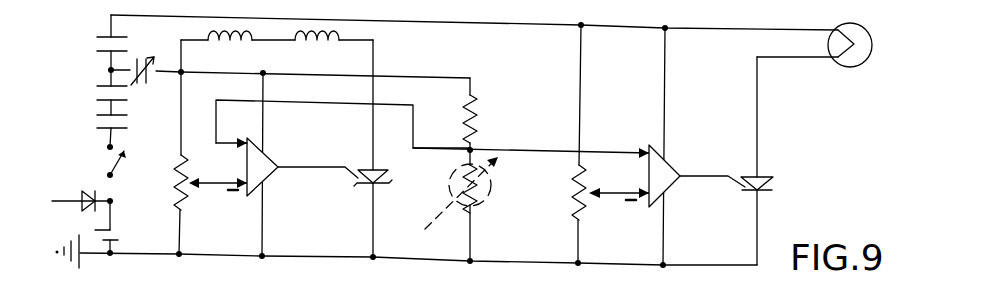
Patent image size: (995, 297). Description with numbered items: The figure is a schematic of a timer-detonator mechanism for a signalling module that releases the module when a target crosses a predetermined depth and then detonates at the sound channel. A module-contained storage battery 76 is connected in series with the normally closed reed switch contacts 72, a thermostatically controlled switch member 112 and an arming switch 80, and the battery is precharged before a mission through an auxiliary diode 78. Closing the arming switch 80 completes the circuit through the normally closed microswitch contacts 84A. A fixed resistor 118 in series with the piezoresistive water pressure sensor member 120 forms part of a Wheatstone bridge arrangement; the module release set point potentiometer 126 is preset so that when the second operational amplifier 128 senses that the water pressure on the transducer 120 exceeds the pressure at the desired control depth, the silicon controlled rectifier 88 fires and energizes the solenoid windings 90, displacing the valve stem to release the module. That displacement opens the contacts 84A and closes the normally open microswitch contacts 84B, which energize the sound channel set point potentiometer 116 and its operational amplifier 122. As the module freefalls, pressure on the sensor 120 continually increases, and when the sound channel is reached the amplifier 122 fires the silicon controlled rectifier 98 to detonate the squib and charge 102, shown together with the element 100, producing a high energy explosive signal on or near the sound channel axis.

The normally open microswitch contacts 84B is at (97, 38).
The normally closed microswitch contacts 84A is at (150, 85).
The reed switch contacts 72 is at (97, 86).
The thermostatically controlled switch member 112 is at (97, 128).
The arming switch 80 is at (107, 147).
The auxiliary diode 78 is at (82, 196).
The storage battery 76 is at (123, 227).
The solenoid windings 90 is at (250, 46).
The module release set point potentiometer 126 is at (210, 196).
The second operational amplifier 128 is at (287, 158).
The silicon controlled rectifier 88 is at (352, 183).
The fixed resistor 118 is at (493, 119).
The piezoresistive water pressure sensor member 120 is at (470, 202).
The sound channel set point potentiometer 116 is at (590, 206).
The operational amplifier 122 is at (666, 150).
The silicon controlled rectifier 98 is at (772, 190).
The lamp 100 is at (846, 22).
The squib and charge 102 is at (864, 31).